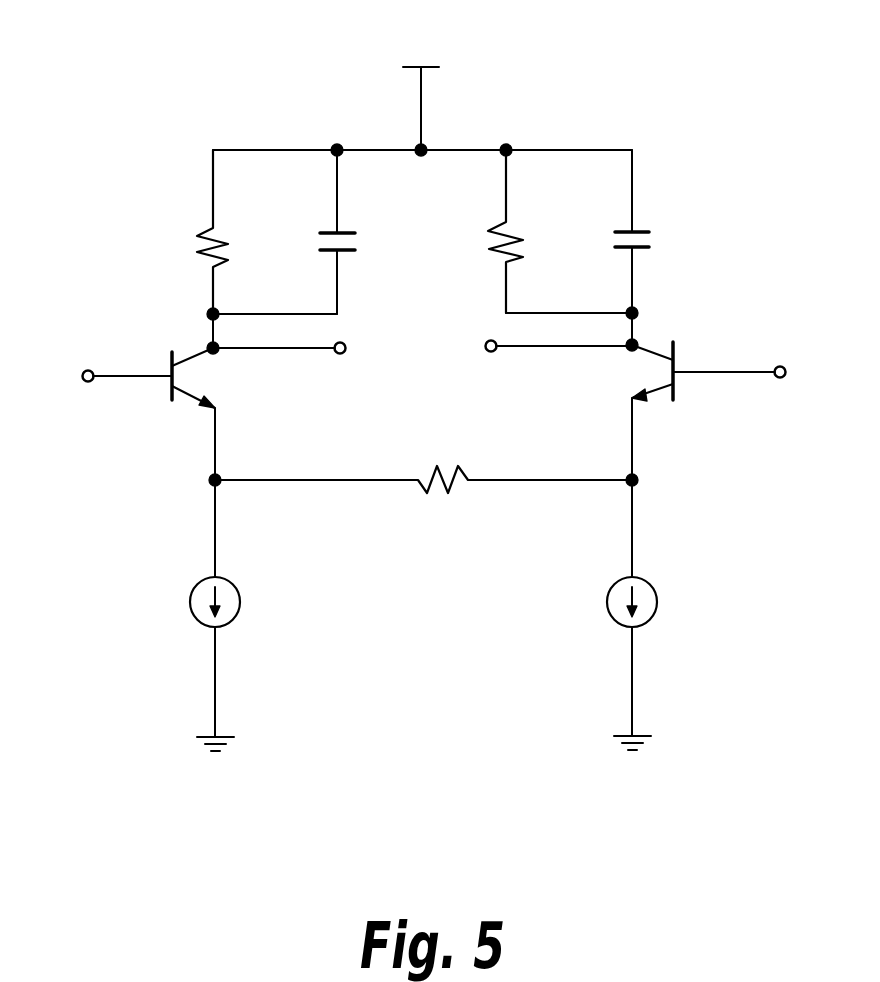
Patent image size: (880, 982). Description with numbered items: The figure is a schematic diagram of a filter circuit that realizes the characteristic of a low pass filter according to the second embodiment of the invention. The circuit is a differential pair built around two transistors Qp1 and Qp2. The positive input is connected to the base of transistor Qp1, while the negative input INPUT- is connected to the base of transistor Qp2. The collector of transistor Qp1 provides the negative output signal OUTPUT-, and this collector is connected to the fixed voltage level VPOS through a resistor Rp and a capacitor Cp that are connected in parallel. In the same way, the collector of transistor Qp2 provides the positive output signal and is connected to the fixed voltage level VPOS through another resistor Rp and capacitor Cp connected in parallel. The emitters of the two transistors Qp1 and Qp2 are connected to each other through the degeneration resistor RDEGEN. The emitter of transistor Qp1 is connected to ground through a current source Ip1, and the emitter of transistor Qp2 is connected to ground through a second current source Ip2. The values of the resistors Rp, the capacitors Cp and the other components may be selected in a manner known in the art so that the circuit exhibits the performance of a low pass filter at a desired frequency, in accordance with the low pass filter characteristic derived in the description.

The fixed voltage level VPOS is at (431, 82).
The resistor Rp is at (383, 232).
The capacitor Cp is at (505, 232).
The transistor Qp1 is at (220, 397).
The transistor Qp2 is at (629, 396).
The negative input INPUT- is at (753, 392).
The negative output signal OUTPUT- is at (307, 370).
The degeneration resistor RDEGEN is at (423, 507).
The current source Ip1 is at (245, 615).
The current source Ip2 is at (662, 615).